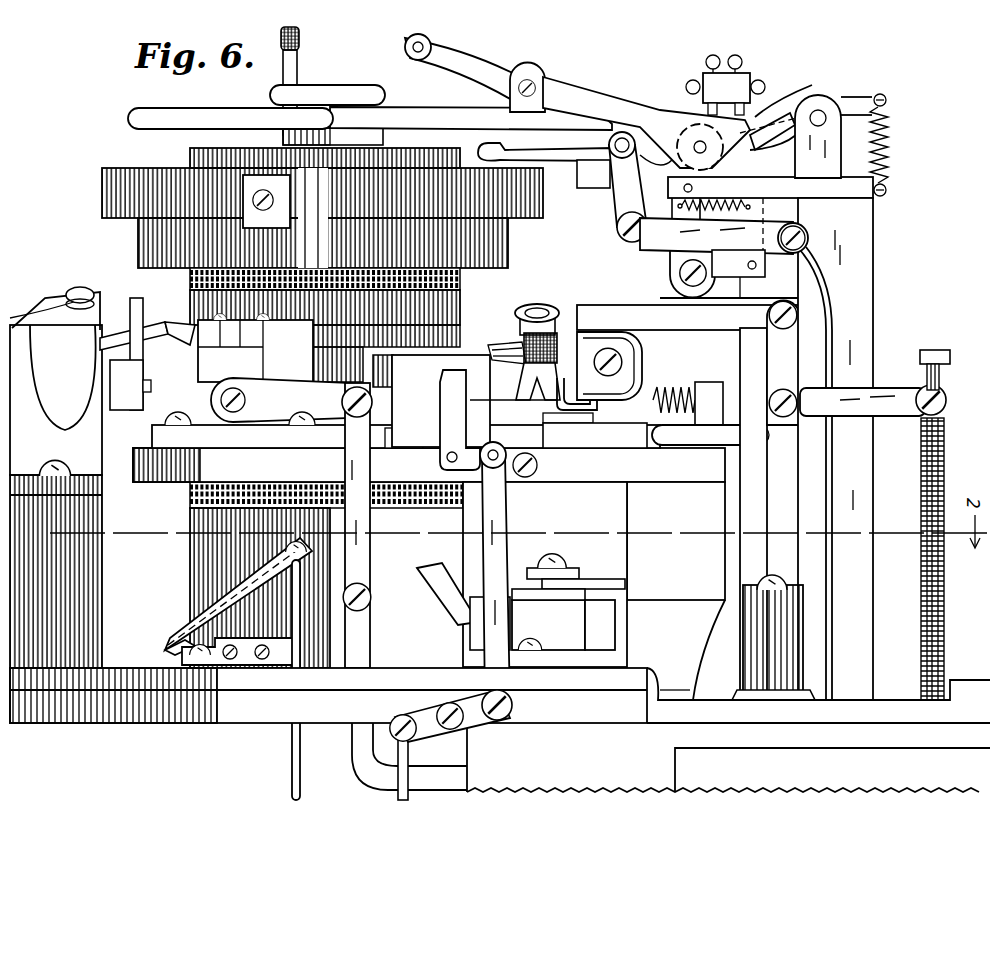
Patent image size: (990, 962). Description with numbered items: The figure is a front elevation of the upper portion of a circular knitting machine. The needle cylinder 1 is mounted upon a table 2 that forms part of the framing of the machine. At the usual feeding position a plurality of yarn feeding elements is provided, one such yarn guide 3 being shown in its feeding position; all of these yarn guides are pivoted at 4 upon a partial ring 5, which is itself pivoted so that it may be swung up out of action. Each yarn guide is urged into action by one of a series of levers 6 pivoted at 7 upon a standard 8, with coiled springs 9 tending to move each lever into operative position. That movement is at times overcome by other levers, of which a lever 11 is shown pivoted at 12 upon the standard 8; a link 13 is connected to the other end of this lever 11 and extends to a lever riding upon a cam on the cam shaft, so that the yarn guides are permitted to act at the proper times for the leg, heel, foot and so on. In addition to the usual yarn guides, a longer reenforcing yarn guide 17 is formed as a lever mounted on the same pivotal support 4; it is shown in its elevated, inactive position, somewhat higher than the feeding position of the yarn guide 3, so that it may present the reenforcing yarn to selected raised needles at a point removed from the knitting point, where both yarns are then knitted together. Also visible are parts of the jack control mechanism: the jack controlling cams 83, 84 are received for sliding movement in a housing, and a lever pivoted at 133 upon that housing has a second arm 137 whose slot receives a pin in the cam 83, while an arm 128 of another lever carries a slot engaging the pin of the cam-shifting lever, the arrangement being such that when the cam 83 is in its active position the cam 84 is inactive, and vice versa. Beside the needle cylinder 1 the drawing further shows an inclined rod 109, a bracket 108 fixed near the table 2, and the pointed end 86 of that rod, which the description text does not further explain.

The needle cylinder 1 is at (456, 303).
The table 2 is at (266, 714).
The yarn feeding element 3 is at (571, 140).
The pivot 4 is at (698, 143).
The partial ring 5 is at (413, 115).
The lever 6 is at (760, 117).
The pivot 7 is at (820, 112).
The standard 8 is at (860, 238).
The coiled spring 9 is at (888, 144).
The lever 11 is at (614, 200).
The pivot 12 is at (622, 241).
The link 13 is at (828, 317).
The reenforcing yarn guide 17 is at (475, 63).
The jack controlling cam 83 is at (440, 577).
The jack controlling cam 84 is at (608, 617).
The rod tip 86 is at (177, 643).
The bracket 108 is at (253, 603).
The rod 109 is at (247, 587).
The arm 128 is at (605, 577).
The pivot 133 is at (550, 558).
The second arm 137 is at (551, 588).